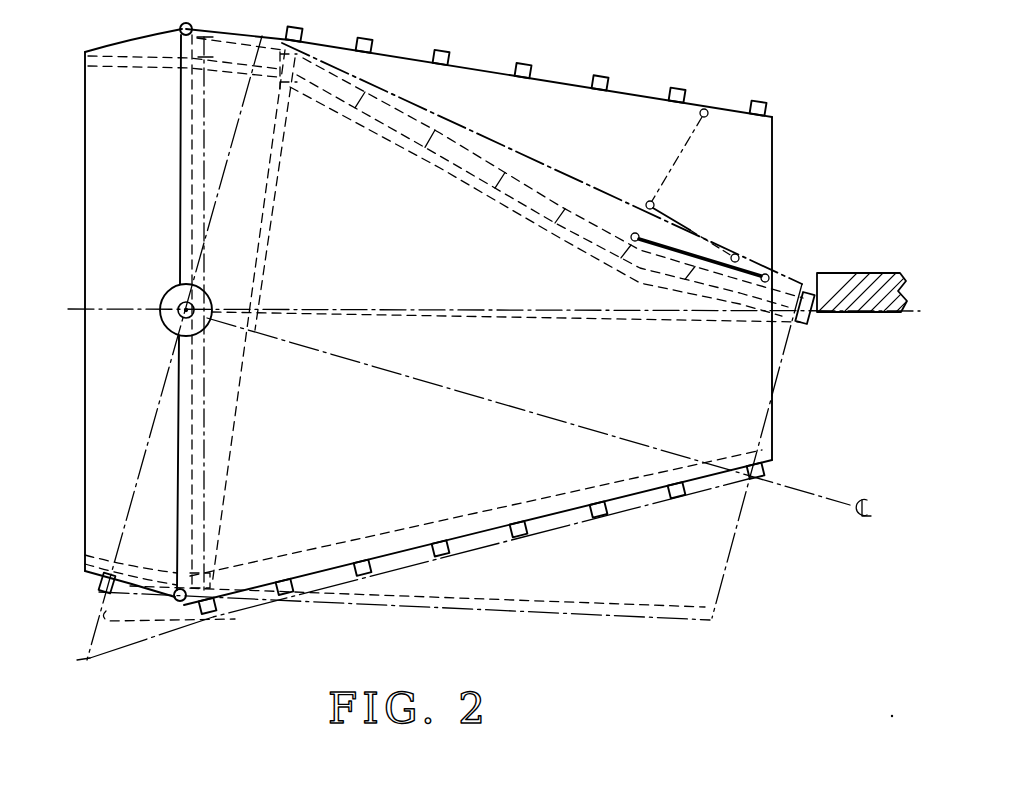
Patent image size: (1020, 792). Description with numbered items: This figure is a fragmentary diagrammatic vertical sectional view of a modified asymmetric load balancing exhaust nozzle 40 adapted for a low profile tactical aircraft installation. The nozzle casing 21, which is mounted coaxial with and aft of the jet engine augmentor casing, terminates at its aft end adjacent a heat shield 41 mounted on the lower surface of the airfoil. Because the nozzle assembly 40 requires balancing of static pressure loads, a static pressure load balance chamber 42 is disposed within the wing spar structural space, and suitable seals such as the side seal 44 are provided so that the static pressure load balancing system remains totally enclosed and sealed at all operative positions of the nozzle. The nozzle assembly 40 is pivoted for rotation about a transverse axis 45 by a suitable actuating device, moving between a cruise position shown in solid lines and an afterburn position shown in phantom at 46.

The nozzle casing 21 is at (408, 140).
The asymmetric load balancing exhaust nozzle 40 is at (792, 402).
The heat shield 41 is at (850, 273).
The static pressure load balance chamber 42 is at (640, 108).
The side seal 44 is at (655, 202).
The transverse axis 45 is at (165, 297).
The afterburn position 46 is at (712, 618).